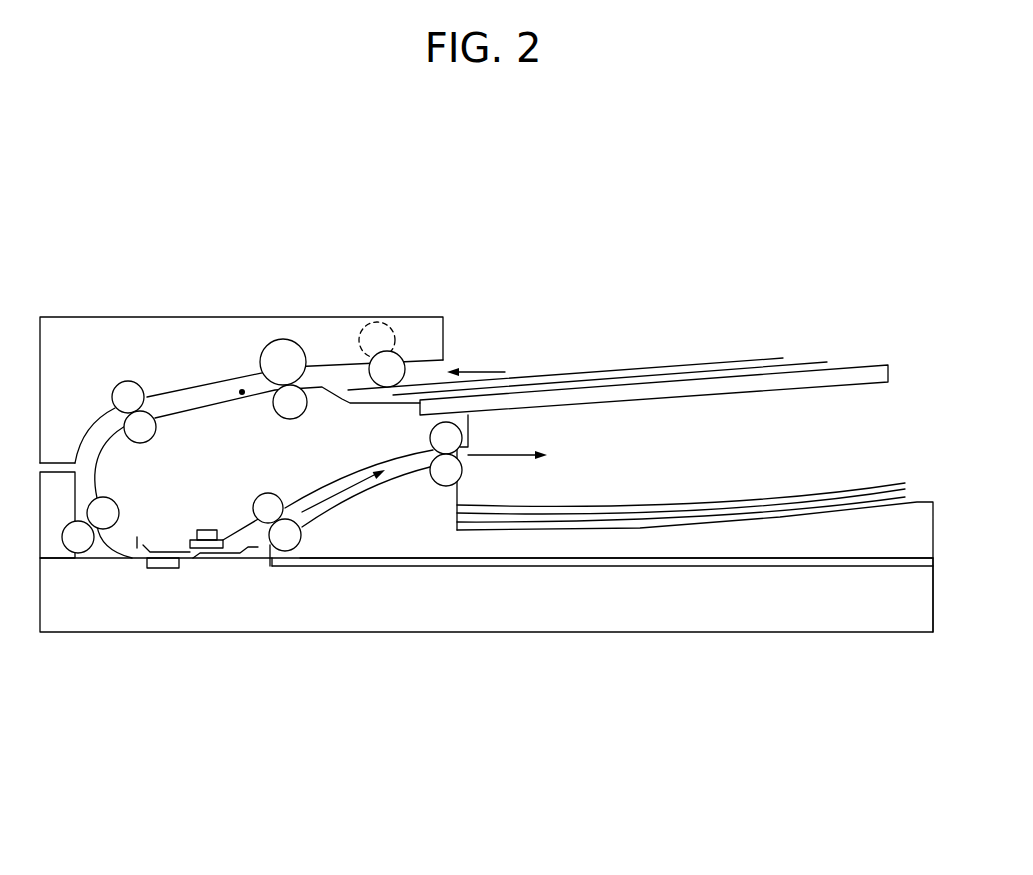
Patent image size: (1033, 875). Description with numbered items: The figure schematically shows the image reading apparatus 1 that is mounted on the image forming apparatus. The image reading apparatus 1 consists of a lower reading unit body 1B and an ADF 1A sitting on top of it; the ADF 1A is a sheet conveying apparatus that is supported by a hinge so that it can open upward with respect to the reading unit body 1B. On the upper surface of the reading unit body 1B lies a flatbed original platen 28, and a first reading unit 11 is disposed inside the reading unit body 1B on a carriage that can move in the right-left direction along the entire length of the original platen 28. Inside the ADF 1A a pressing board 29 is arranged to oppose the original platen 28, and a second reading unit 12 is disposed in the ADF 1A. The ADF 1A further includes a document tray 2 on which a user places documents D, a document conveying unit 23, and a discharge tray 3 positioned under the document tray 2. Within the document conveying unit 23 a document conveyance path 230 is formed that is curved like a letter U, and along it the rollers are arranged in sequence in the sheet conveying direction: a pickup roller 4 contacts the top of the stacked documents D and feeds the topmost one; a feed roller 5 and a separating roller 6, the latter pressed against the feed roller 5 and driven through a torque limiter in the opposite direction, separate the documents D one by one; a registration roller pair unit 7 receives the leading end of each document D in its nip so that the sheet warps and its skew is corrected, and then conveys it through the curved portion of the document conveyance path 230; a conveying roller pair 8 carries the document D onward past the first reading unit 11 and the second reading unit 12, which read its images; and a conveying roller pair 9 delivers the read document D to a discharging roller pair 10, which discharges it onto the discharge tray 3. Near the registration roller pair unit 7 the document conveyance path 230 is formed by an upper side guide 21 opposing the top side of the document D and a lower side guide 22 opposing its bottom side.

The image reading apparatus 1 is at (579, 280).
The ADF 1A is at (451, 311).
The reading unit body 1B is at (456, 652).
The document tray 2 is at (800, 388).
The discharge tray 3 is at (918, 504).
The pickup roller 4 is at (369, 360).
The feed roller 5 is at (286, 338).
The separating roller 6 is at (305, 413).
The registration roller pair unit 7 is at (118, 383).
The conveying roller pair 8 is at (62, 553).
The conveying roller pair 9 is at (264, 492).
The discharging roller pair 10 is at (433, 481).
The first reading unit 11 is at (163, 569).
The second reading unit 12 is at (205, 529).
The upper side guide 21 is at (210, 384).
The lower side guide 22 is at (182, 412).
The document conveying unit 23 is at (90, 317).
The document conveyance path 230 is at (242, 390).
The original platen 28 is at (603, 567).
The pressing board 29 is at (672, 561).
The document D is at (637, 367).